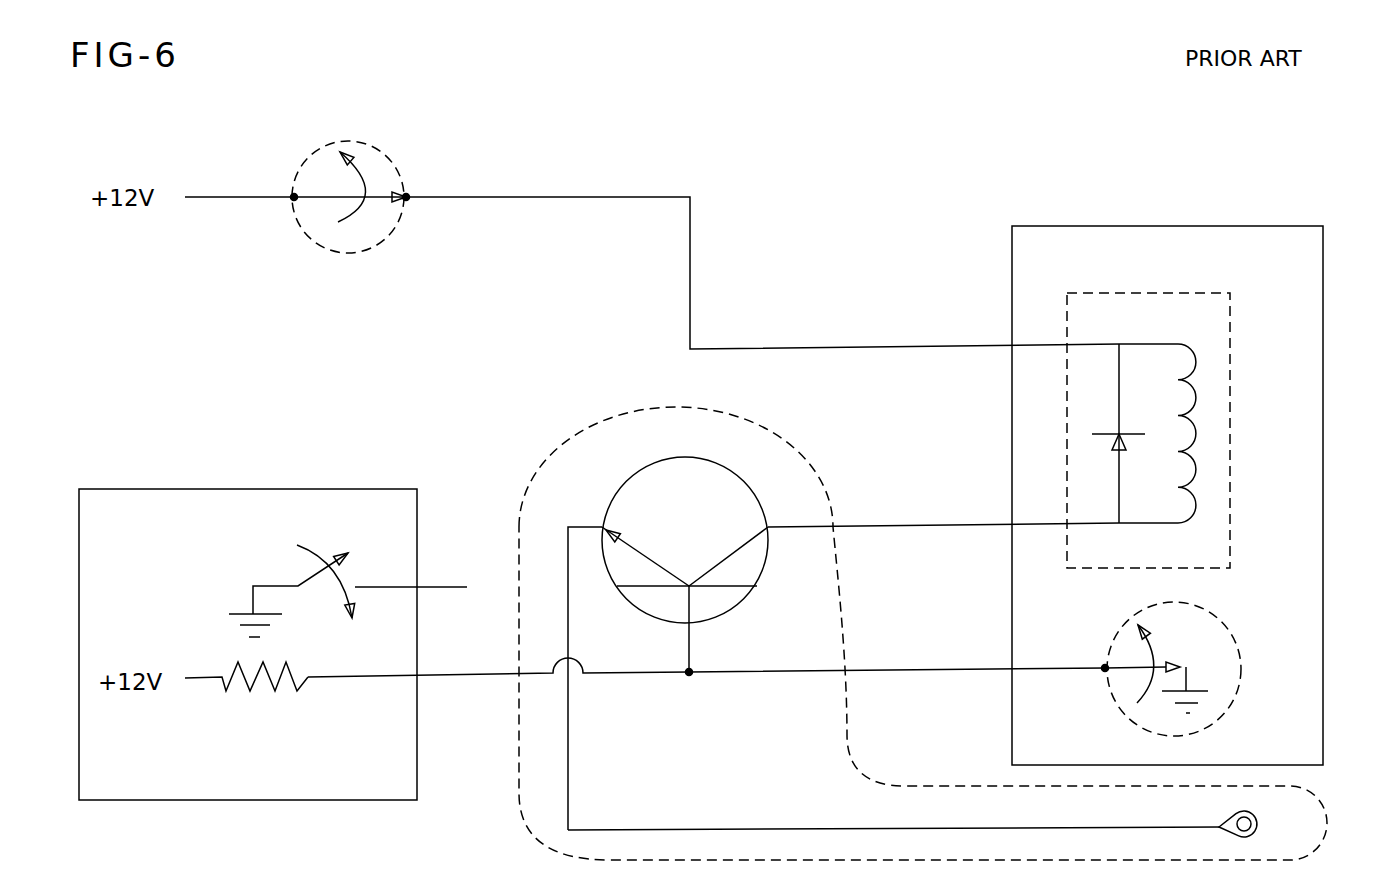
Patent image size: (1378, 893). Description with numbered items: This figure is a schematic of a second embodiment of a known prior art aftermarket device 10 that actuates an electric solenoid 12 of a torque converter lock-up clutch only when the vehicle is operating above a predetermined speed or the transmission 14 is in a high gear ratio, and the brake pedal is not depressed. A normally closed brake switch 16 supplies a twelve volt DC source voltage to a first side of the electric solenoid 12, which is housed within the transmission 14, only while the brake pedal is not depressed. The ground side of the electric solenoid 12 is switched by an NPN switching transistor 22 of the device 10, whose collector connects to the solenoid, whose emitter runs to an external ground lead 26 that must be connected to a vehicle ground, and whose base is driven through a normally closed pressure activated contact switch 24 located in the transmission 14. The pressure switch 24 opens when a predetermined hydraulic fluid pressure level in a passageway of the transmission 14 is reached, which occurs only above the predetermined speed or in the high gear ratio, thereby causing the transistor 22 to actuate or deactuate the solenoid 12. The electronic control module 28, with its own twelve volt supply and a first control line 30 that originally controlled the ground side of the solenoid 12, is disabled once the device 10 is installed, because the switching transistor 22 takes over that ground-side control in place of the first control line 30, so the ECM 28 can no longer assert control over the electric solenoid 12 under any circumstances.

The aftermarket device 10 is at (594, 430).
The electric solenoid 12 is at (1148, 294).
The transmission 14 is at (1008, 296).
The brake switch 16 is at (403, 172).
The NPN switching transistor 22 is at (737, 472).
The pressure activated contact switch 24 is at (1223, 622).
The external ground lead 26 is at (672, 830).
The electronic control module 28 is at (292, 487).
The first control line 30 is at (437, 587).